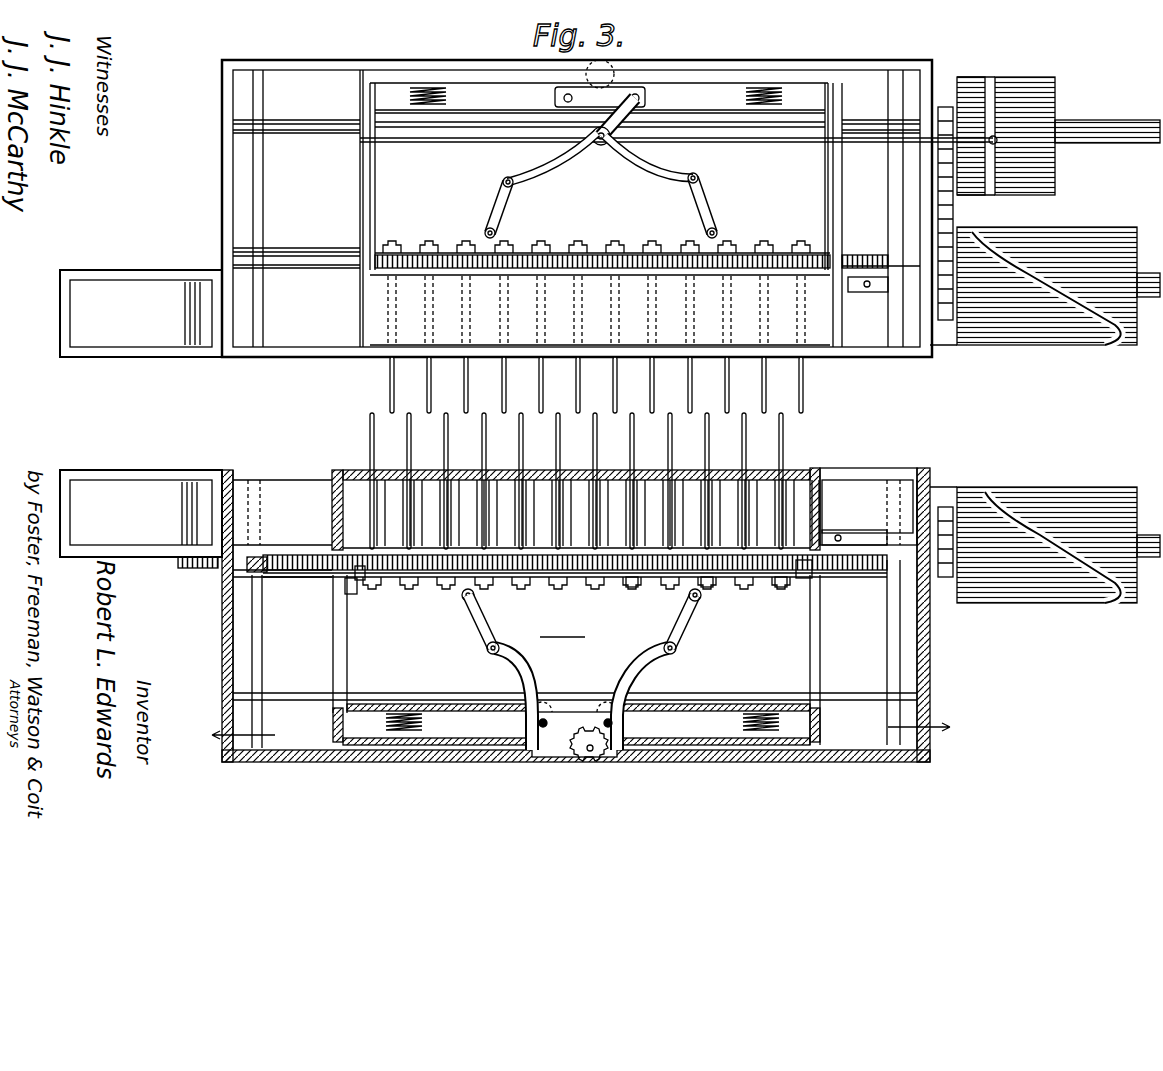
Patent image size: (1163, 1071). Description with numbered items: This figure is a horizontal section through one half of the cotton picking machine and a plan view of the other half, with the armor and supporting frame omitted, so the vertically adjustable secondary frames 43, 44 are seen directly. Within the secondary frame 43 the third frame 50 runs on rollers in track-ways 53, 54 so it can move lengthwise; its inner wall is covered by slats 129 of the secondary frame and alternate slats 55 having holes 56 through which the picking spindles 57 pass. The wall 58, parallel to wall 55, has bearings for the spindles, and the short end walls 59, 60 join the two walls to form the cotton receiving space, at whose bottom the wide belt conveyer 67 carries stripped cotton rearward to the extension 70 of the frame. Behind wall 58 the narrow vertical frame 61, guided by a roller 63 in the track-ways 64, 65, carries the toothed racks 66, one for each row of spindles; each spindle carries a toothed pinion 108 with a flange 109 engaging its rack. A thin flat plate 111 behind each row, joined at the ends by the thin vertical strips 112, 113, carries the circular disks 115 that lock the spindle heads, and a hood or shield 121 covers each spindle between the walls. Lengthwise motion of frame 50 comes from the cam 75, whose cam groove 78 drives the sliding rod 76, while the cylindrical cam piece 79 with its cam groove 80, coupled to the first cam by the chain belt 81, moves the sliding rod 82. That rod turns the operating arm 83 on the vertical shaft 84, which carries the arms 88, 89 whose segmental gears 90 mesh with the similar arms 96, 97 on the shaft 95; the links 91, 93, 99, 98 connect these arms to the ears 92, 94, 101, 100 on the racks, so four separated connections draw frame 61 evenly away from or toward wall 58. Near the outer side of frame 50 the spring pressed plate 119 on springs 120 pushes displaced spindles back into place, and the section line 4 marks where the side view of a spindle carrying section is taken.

The section line 4— 4 is at (582, 738).
The secondary frame 43 is at (918, 762).
The secondary frame 44 is at (890, 68).
The third frame 50 is at (363, 232).
The track-way 53 is at (322, 114).
The track-way 54 is at (278, 248).
The slats of frame 50 55 is at (812, 468).
The holes 56 is at (626, 472).
The picking spindles 57 is at (806, 390).
The wall 58 is at (572, 553).
The short end wall 59 is at (824, 520).
The short end wall 60 is at (330, 490).
The narrow vertical frame 61 is at (210, 567).
The roller 63 is at (247, 583).
The track-way 64 is at (258, 194).
The track-way 65 is at (264, 650).
The toothed racks 66 is at (868, 260).
The belt conveyer 67 is at (183, 310).
The extension of frame 43 70 is at (150, 358).
The cam 75 is at (1045, 415).
The sliding rod 76 is at (870, 295).
The cam groove 78 is at (1065, 330).
The cylindrical cam piece 79 is at (1072, 136).
The cam groove 80 is at (989, 78).
The chain belt 81 is at (955, 218).
The sliding rod 82 is at (799, 138).
The operating arm 83 is at (606, 142).
The vertical shaft 84 is at (640, 715).
The arm 88 is at (661, 168).
The arm 89 is at (625, 682).
The segmental gears 90 is at (610, 765).
The link 91 is at (682, 630).
The ear 92 is at (705, 586).
The link 93 is at (712, 208).
The ear 94 is at (710, 237).
The shaft 95 is at (538, 724).
The arm 96 is at (546, 164).
The arm 97 is at (522, 665).
The link 98 is at (497, 200).
The link 99 is at (486, 625).
The ear 100 is at (498, 237).
The ear 101 is at (460, 593).
The toothed pinion 108 is at (634, 587).
The flange 109 is at (381, 578).
The thin flat plate 111 is at (768, 578).
The thin vertical strip 112 is at (346, 586).
The thin vertical strip 113 is at (805, 578).
The circular disks 115 is at (562, 626).
The spring pressed plate 119 is at (493, 128).
The springs 120 is at (440, 84).
The hood or shield 121 is at (478, 495).
The slats of secondary frame 129 is at (908, 478).